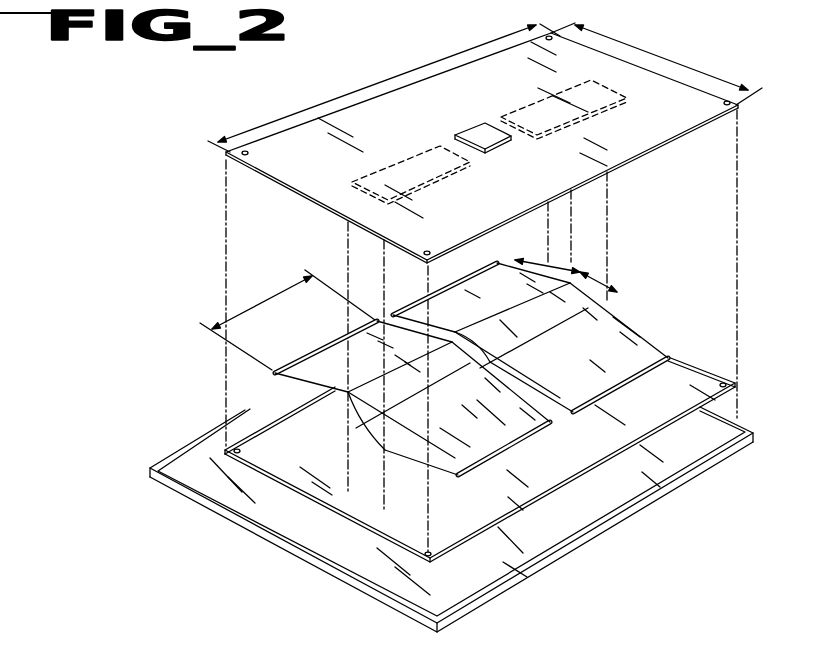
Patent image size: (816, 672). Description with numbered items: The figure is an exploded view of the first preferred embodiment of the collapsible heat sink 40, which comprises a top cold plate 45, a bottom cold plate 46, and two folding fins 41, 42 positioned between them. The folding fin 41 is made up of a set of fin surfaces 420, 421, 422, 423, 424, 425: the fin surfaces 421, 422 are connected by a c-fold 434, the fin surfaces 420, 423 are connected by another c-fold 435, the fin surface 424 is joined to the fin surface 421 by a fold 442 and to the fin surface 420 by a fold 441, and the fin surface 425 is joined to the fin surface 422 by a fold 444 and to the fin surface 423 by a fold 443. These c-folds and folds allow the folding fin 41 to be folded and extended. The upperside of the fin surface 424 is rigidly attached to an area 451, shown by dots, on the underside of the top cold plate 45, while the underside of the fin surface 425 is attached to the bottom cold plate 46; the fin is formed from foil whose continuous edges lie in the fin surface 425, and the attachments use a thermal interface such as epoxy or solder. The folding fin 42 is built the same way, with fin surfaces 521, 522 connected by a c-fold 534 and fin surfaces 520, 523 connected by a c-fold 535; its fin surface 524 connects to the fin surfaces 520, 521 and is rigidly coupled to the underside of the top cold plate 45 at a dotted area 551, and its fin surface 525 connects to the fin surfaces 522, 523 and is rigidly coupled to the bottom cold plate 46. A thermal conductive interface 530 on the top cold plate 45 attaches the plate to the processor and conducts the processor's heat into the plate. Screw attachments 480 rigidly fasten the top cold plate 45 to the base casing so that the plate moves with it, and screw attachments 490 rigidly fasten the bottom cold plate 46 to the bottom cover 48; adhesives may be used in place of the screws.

The heat sink 40 is at (67, 123).
The folding fin 41 is at (398, 403).
The folding fin 42 is at (530, 334).
The top cold plate 45 is at (432, 120).
The bottom cold plate 46 is at (564, 466).
The bottom cover 48 is at (584, 520).
The fin surface 420 is at (471, 411).
The fin surface 421 is at (341, 386).
The fin surface 422 is at (305, 392).
The fin surface 423 is at (408, 450).
The fin surface 424 is at (422, 386).
The fin surface 425 is at (395, 440).
The c-fold 434 is at (302, 358).
The c-fold 435 is at (483, 470).
The fold 441 is at (452, 378).
The fold 442 is at (383, 377).
The fold 443 is at (407, 442).
The fold 444 is at (350, 416).
The area 451 is at (473, 184).
The screw attachments 480 is at (248, 153).
The screw attachments 490 is at (240, 451).
The fin surface 520 is at (607, 348).
The fin surface 521 is at (517, 301).
The fin surface 522 is at (420, 320).
The fin surface 523 is at (571, 416).
The fin surface 524 is at (548, 326).
The fin surface 525 is at (512, 380).
The thermal conductive interface 530 is at (483, 133).
The c-fold 534 is at (478, 255).
The c-fold 535 is at (624, 385).
The area 551 is at (616, 117).